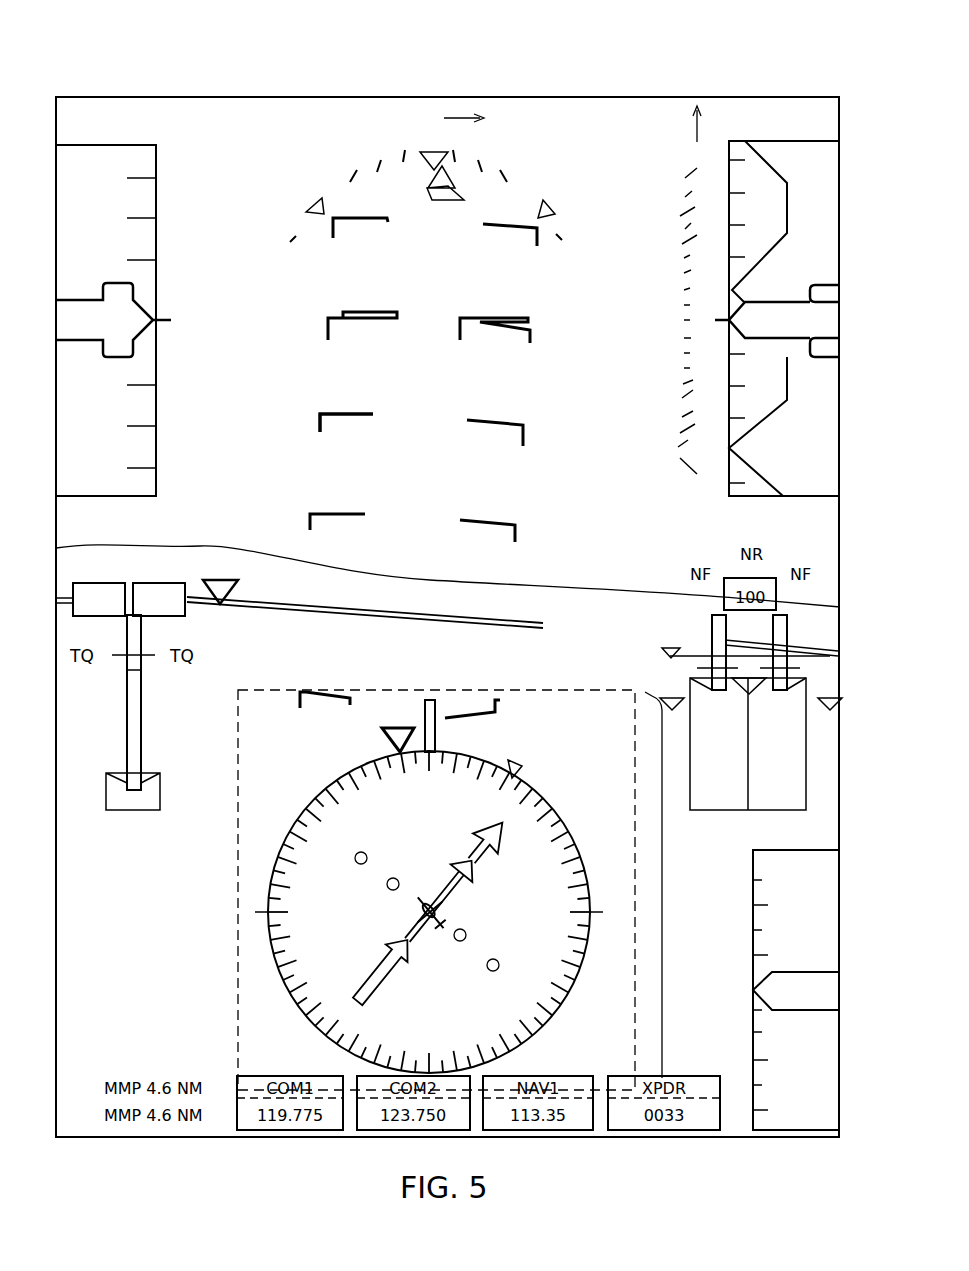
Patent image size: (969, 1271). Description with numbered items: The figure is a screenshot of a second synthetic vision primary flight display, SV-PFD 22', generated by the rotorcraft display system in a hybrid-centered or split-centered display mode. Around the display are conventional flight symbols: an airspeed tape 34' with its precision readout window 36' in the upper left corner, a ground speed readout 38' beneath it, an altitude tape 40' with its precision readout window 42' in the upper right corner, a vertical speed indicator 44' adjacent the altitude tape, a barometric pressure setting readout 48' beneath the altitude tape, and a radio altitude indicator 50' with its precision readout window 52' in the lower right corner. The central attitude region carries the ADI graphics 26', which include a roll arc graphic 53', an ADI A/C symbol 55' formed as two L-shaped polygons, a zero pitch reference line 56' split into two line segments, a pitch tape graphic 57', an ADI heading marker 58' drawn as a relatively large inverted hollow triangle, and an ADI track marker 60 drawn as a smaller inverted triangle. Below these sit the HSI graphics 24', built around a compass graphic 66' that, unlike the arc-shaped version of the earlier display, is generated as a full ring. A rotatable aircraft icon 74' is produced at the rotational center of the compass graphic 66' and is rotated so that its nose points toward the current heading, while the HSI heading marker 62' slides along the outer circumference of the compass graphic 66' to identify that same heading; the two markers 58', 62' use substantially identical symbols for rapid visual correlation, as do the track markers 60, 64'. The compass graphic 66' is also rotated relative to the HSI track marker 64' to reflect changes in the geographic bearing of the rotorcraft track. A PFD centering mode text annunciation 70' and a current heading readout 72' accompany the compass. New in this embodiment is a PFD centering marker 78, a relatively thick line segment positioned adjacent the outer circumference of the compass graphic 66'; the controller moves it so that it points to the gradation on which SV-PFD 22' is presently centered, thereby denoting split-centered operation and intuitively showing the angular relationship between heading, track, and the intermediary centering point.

The SV-PFD 22' is at (444, 573).
The HSI graphics 24' is at (457, 889).
The ADI graphics 26' is at (470, 380).
The airspeed tape 34' is at (119, 278).
The precision readout window 36' is at (113, 335).
The ground speed readout 38' is at (138, 526).
The altitude tape 40' is at (806, 304).
The precision readout window 42' is at (801, 318).
The vertical speed indicator 44' is at (669, 321).
The barometric pressure setting readout 48' is at (785, 503).
The radio altitude indicator 50' is at (817, 990).
The precision readout window 52' is at (818, 971).
The roll arc graphic 53' is at (432, 196).
The ADI A/C symbol 55' is at (429, 303).
The zero pitch reference line 56' is at (469, 594).
The pitch tape graphic 57' is at (353, 442).
The ADI heading marker 58' is at (299, 578).
The ADI track marker 60 is at (458, 884).
The HSI heading marker 62' is at (404, 701).
The HSI track marker 64' is at (535, 749).
The compass graphic 66' is at (429, 908).
The PFD centering mode text annunciation 70' is at (400, 682).
The current heading readout 72' is at (597, 775).
The rotatable aircraft (A/C) icon 74' is at (403, 912).
The PFD centering marker 78 is at (436, 710).